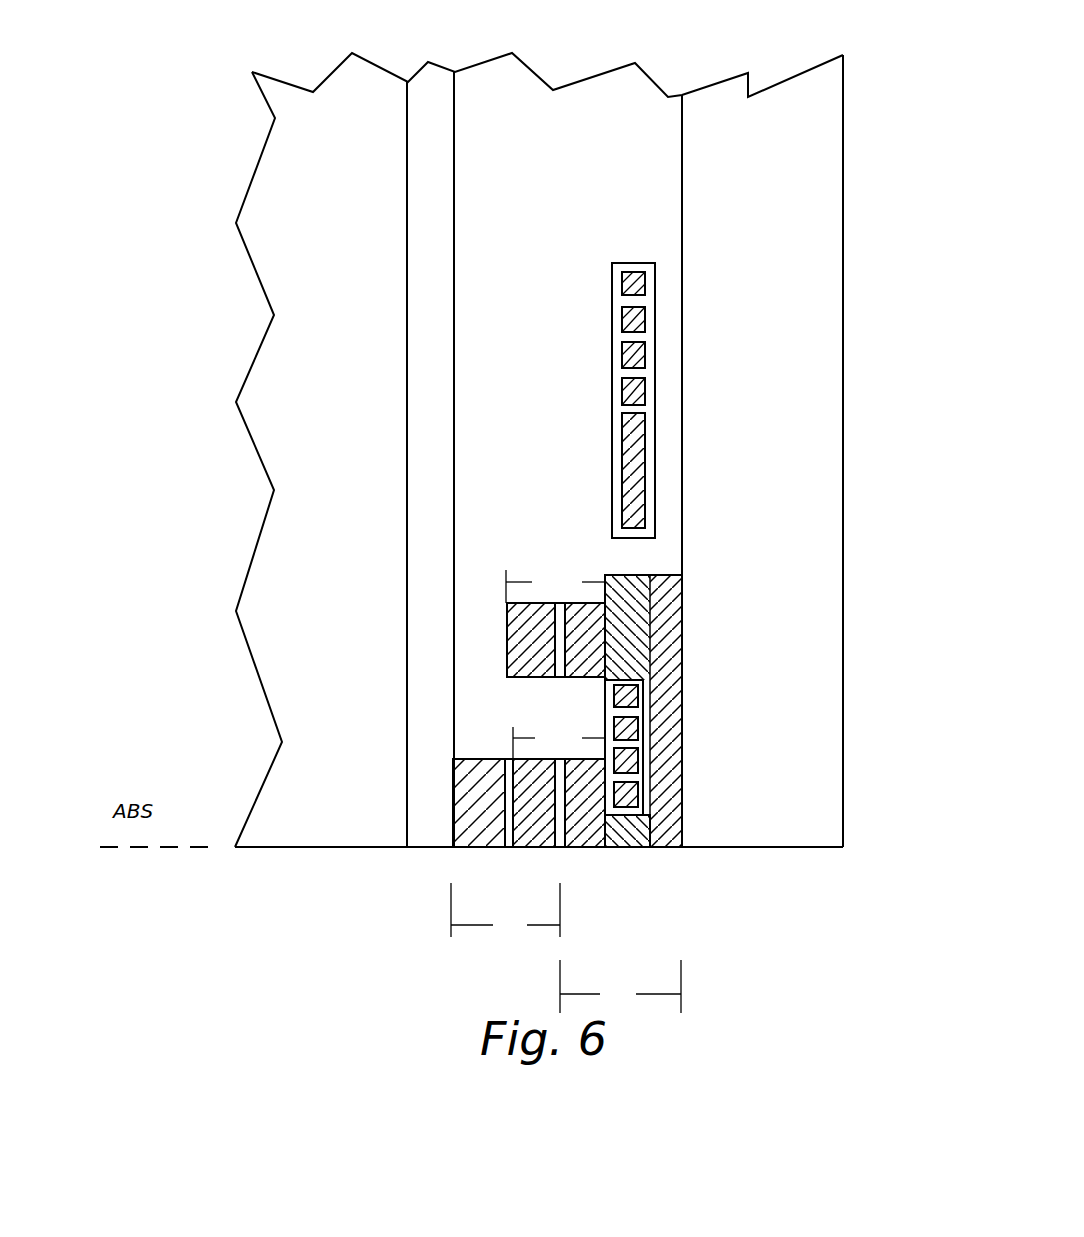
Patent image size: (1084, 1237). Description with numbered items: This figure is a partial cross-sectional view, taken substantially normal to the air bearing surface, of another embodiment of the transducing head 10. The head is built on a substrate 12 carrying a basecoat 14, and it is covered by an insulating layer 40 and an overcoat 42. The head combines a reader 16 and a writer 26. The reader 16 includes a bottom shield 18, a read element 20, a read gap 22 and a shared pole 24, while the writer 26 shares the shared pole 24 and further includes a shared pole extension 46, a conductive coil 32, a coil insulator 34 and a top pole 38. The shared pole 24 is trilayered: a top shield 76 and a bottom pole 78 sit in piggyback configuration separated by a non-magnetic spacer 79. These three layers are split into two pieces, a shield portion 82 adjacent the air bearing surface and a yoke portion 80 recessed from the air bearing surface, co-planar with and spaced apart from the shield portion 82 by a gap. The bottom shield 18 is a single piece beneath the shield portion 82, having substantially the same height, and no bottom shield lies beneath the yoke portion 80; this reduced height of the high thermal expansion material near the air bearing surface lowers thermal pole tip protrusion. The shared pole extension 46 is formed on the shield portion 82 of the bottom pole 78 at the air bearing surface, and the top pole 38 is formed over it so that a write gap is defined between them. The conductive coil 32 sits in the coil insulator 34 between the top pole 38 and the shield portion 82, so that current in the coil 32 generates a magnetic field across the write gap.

The transducing head 10 is at (222, 128).
The substrate 12 is at (320, 523).
The basecoat 14 is at (432, 183).
The reader 16 is at (505, 911).
The bottom shield 18 is at (468, 825).
The read element 20 is at (507, 848).
The read gap 22 is at (508, 786).
The shared pole 24 is at (496, 588).
The writer 26 is at (620, 986).
The conductive coil 32 is at (642, 397).
The coil insulator 34 is at (643, 748).
The top pole 38 is at (668, 783).
The insulating layer 40 is at (550, 147).
The overcoat 42 is at (820, 432).
The shared pole extension 46 is at (625, 848).
The top shield 76 is at (517, 648).
The bottom pole 78 is at (578, 667).
The non-magnetic spacer 79 is at (558, 620).
The yoke portion 80 is at (555, 586).
The shield portion 82 is at (559, 743).